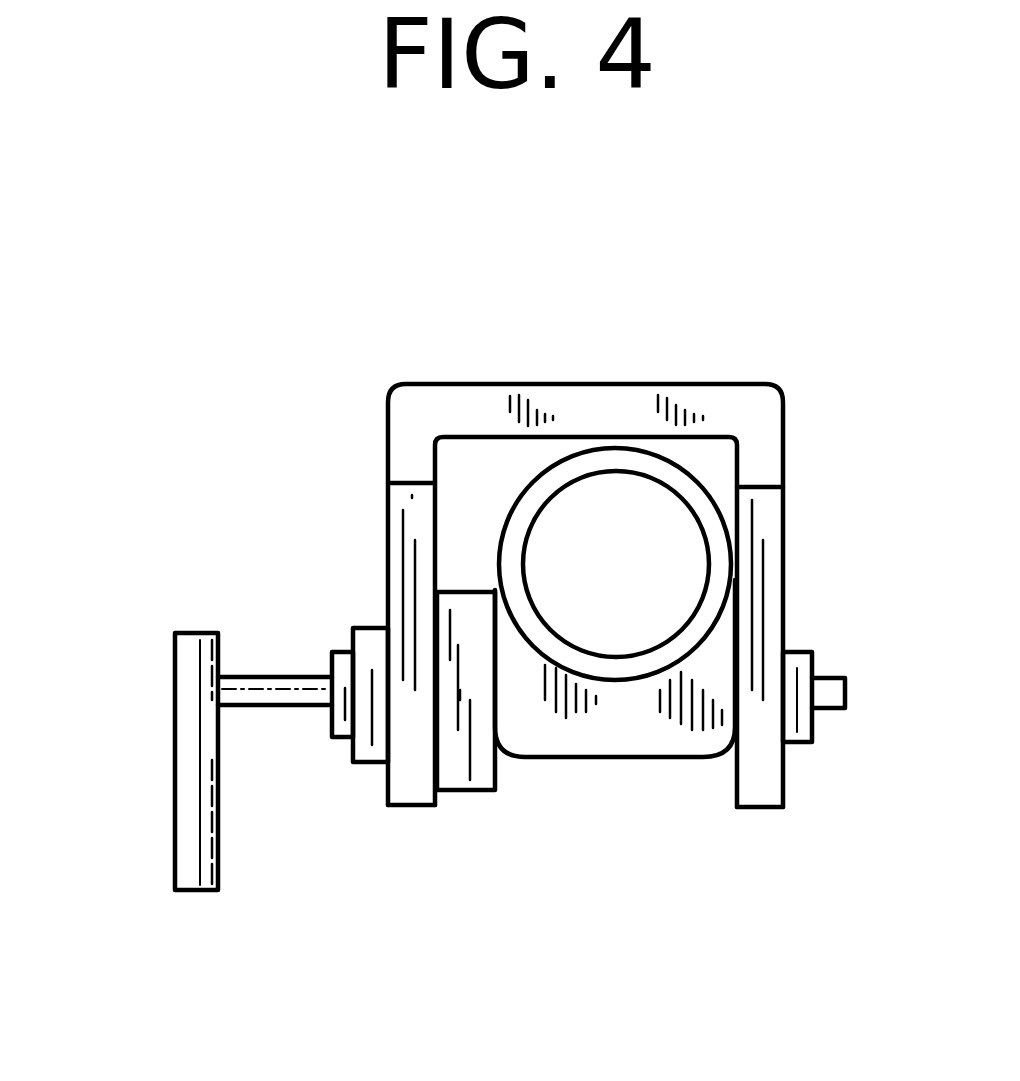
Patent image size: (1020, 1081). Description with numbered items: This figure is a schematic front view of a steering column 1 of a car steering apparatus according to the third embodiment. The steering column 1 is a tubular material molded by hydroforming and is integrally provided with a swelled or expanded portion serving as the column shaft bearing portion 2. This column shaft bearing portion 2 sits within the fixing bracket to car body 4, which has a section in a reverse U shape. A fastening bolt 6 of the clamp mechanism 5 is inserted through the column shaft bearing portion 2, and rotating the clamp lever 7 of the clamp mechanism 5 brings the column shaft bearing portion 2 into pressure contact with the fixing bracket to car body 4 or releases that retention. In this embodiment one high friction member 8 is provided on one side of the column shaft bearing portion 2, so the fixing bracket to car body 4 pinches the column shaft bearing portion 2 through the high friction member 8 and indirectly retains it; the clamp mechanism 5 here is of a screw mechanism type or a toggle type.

The steering column 1 is at (527, 486).
The column shaft bearing portion 2 is at (612, 760).
The fixing bracket to car body 4 is at (637, 384).
The clamp mechanism 5 is at (342, 653).
The fastening bolt 6 is at (827, 678).
The clamp lever 7 is at (175, 770).
The high friction member 8 is at (460, 792).